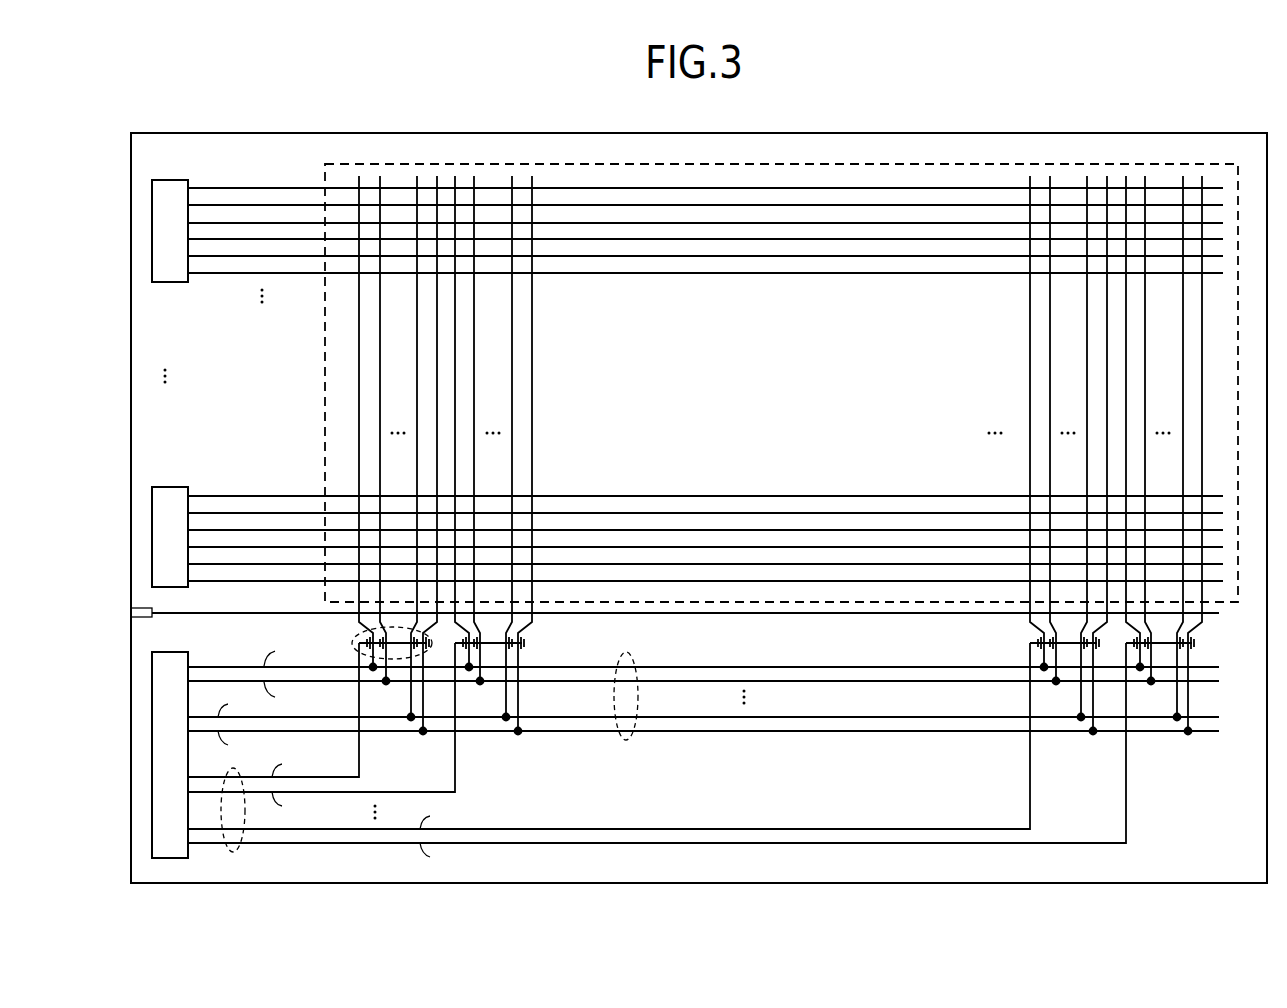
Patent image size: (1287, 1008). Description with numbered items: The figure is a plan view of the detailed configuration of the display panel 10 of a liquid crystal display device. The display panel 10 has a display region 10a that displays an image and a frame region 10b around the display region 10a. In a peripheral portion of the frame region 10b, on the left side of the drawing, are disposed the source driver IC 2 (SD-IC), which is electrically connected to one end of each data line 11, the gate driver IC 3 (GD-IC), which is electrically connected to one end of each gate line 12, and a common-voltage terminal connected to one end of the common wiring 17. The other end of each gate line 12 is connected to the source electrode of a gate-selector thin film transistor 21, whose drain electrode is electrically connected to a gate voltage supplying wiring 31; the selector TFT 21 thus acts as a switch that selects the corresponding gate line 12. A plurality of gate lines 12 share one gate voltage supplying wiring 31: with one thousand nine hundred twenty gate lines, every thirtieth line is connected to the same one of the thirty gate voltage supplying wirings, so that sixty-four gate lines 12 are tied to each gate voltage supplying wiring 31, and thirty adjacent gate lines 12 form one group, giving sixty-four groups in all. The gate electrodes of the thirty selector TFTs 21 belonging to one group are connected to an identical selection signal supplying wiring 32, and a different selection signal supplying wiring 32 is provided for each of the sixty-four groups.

The source driver IC 2 is at (151, 224).
The gate driver IC 3 is at (152, 718).
The display panel 10 is at (1214, 133).
The display region 10a is at (860, 164).
The frame region 10b is at (952, 146).
The data line 11 is at (718, 273).
The gate line 12 is at (532, 392).
The common wiring 17 is at (237, 613).
The gate-selector thin film transistor 21 is at (354, 635).
The gate voltage supplying wiring 31 is at (637, 655).
The selection signal supplying wiring 32 is at (240, 850).